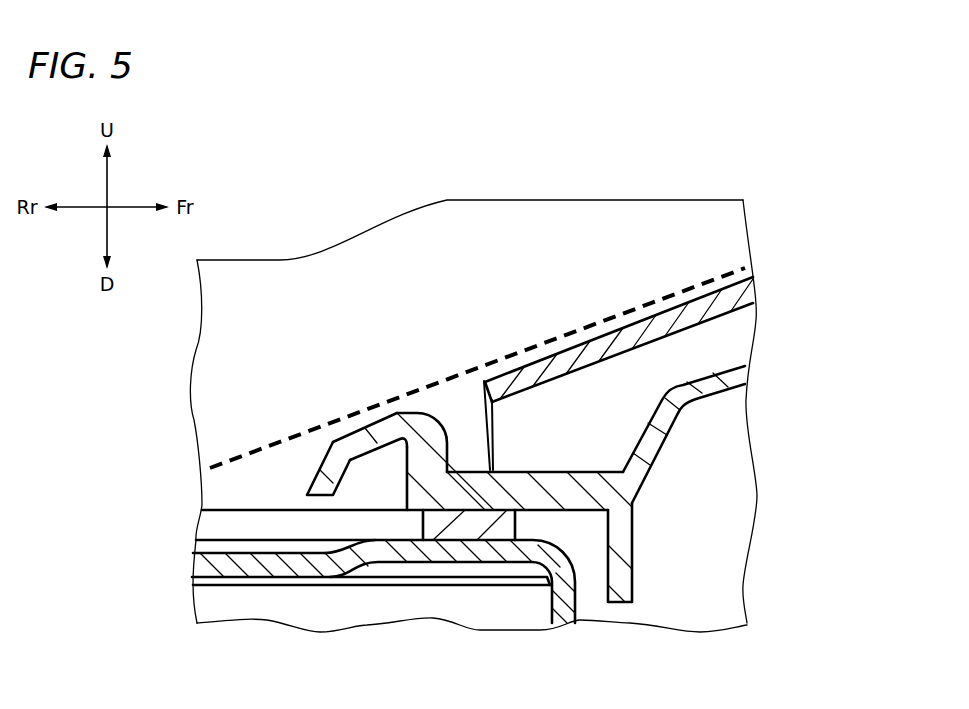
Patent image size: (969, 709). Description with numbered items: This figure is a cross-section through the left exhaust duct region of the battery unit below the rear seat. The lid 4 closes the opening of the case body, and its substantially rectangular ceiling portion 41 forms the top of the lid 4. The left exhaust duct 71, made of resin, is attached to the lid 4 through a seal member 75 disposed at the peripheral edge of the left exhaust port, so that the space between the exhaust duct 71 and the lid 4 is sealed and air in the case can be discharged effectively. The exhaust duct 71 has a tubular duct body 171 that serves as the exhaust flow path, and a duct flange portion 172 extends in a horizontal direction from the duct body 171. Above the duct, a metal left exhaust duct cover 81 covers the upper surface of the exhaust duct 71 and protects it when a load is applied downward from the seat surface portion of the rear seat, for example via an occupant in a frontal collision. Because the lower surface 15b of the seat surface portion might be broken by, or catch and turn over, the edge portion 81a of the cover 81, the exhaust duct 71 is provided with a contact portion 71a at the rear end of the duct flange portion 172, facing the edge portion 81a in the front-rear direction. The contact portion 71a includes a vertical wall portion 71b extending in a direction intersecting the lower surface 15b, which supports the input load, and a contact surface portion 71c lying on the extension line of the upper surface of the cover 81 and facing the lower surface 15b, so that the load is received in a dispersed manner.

The lid 4 is at (232, 586).
The lower surface of seat surface portion 15b is at (710, 268).
The ceiling portion 41 is at (393, 553).
The left exhaust duct 71 is at (668, 448).
The contact portion 71a is at (372, 408).
The vertical wall portion 71b is at (420, 457).
The contact surface portion 71c is at (347, 433).
The seal member 75 is at (470, 523).
The left exhaust duct cover 81 is at (683, 315).
The edge portion 81a is at (484, 397).
The tubular duct body 171 is at (718, 382).
The duct flange portion 172 is at (574, 500).